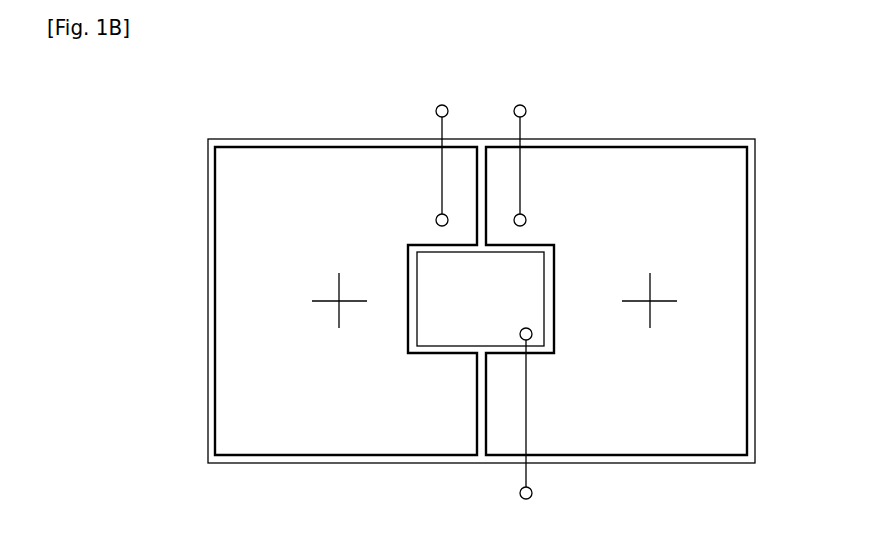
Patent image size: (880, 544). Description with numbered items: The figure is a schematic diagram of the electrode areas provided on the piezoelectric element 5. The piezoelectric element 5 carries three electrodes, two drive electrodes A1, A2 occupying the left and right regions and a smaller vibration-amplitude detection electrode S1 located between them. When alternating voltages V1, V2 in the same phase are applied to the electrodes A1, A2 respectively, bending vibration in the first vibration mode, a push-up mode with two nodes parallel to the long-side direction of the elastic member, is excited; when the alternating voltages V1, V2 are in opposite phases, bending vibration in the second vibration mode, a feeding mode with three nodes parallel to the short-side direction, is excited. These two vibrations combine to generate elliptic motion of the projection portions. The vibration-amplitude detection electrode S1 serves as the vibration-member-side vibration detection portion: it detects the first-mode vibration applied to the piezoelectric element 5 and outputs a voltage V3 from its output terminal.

The piezoelectric element 5 is at (668, 143).
The vibration-amplitude detection electrode S1 is at (480, 299).
The alternating voltage V1 is at (521, 153).
The alternating voltage V2 is at (443, 153).
The output voltage V3 is at (525, 428).
The electrode A1 is at (649, 313).
The electrode A2 is at (339, 313).